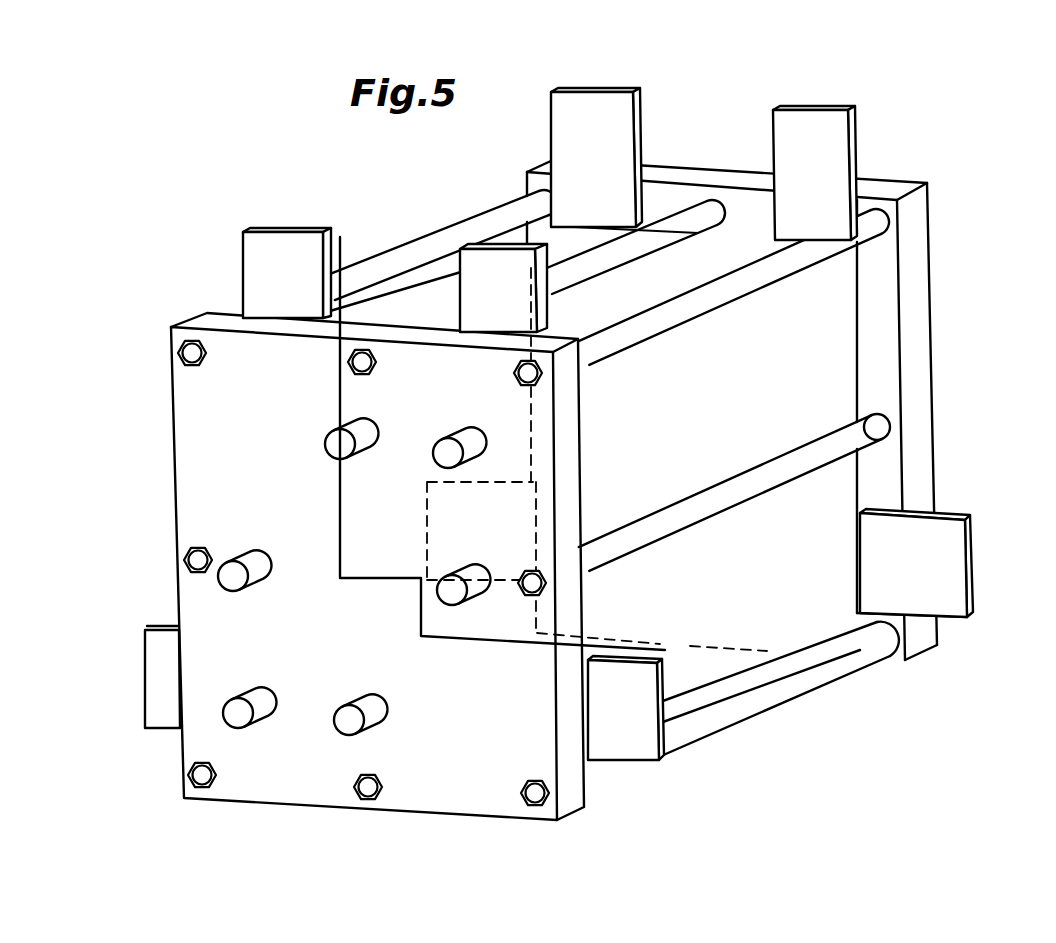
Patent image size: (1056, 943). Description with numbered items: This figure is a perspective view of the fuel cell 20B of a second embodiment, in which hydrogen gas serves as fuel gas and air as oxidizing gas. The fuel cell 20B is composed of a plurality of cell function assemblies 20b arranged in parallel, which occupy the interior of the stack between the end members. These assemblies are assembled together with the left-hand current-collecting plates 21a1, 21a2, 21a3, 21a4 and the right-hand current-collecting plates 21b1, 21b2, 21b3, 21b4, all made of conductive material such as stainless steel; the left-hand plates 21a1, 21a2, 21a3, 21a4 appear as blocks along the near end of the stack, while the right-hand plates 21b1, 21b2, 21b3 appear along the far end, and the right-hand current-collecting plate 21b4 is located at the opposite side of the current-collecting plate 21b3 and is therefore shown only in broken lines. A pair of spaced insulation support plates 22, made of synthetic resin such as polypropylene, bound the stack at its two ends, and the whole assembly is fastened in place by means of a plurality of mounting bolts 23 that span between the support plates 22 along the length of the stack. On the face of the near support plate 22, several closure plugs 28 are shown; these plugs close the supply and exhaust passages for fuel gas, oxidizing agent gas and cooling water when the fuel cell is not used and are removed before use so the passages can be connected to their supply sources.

The fuel cell 20B is at (948, 192).
The cell function assemblies 20b is at (832, 384).
The left-hand current-collecting plate 21a1 is at (283, 246).
The left-hand current-collecting plate 21a2 is at (477, 260).
The left-hand current-collecting plate 21a3 is at (638, 745).
The left-hand current-collecting plate 21a4 is at (152, 640).
The right-hand current-collecting plate 21b1 is at (603, 110).
The right-hand current-collecting plate 21b2 is at (822, 128).
The right-hand current-collecting plate 21b3 is at (948, 532).
The right-hand current-collecting plate 21b4 is at (530, 473).
The insulation support plates 22 is at (183, 424).
The mounting bolts 23 is at (403, 257).
The closure plugs 28 is at (440, 454).